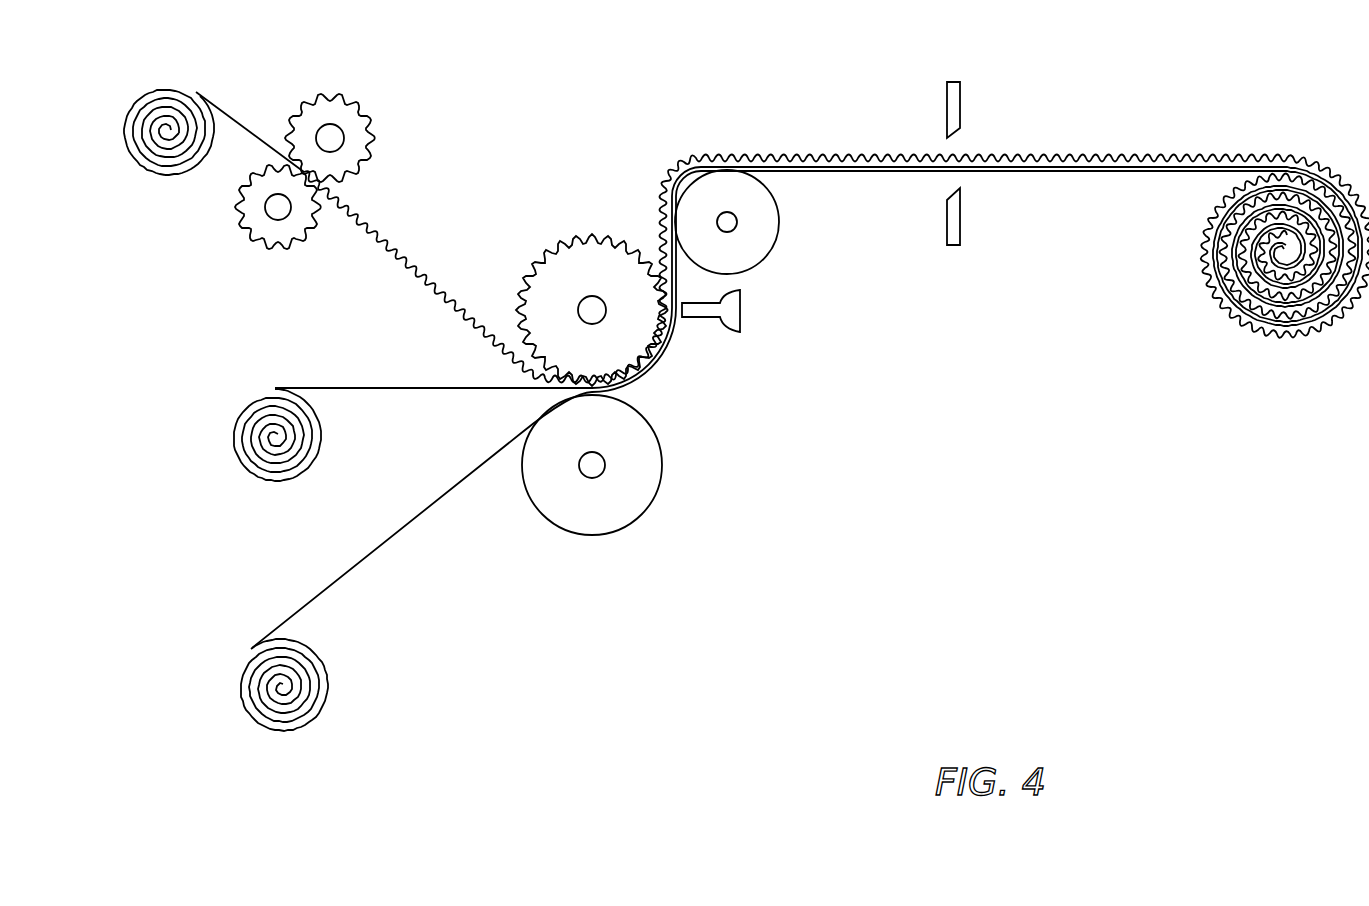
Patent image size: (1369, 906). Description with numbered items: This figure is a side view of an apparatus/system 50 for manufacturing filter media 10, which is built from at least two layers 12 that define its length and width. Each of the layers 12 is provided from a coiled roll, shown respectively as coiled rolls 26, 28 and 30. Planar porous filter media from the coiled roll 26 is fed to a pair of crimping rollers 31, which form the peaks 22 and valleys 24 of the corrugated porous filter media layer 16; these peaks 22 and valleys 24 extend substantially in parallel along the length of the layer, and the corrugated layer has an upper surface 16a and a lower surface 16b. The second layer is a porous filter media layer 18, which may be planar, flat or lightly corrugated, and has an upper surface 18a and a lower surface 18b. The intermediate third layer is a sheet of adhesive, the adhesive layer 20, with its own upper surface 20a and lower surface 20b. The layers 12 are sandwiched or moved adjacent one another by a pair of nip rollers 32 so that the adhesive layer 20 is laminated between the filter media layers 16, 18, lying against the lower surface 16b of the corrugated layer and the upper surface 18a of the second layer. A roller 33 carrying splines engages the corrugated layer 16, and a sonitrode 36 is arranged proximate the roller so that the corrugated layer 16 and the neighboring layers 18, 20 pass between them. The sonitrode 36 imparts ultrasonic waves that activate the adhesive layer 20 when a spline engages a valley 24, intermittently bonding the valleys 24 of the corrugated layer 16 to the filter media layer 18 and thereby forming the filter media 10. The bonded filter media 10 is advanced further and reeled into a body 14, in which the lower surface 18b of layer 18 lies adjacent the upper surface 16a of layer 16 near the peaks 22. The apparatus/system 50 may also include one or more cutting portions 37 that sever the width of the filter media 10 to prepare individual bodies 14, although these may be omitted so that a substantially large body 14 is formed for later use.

The filter media 10 is at (1072, 117).
The layers 12 is at (189, 607).
The body 14 is at (1255, 338).
The corrugated porous filter media layer 16 is at (371, 216).
The upper surface 16a is at (411, 242).
The lower surface 16b is at (392, 259).
The porous filter media layer 18 is at (371, 561).
The upper surface 18a is at (395, 525).
The lower surface 18b is at (422, 512).
The adhesive layer 20 is at (371, 371).
The upper surface 20a is at (468, 386).
The lower surface 20b is at (430, 392).
The peaks 22 is at (438, 285).
The valleys 24 is at (438, 292).
The coiled roll 26 is at (137, 59).
The coiled roll 28 is at (242, 489).
The coiled roll 30 is at (244, 739).
The crimping rollers 31 is at (358, 104).
The nip rollers 32 is at (615, 533).
The roller 33 is at (585, 232).
The sonitrode 36 is at (757, 303).
The cutting portions 37 is at (955, 82).
The apparatus/system 50 is at (1216, 124).